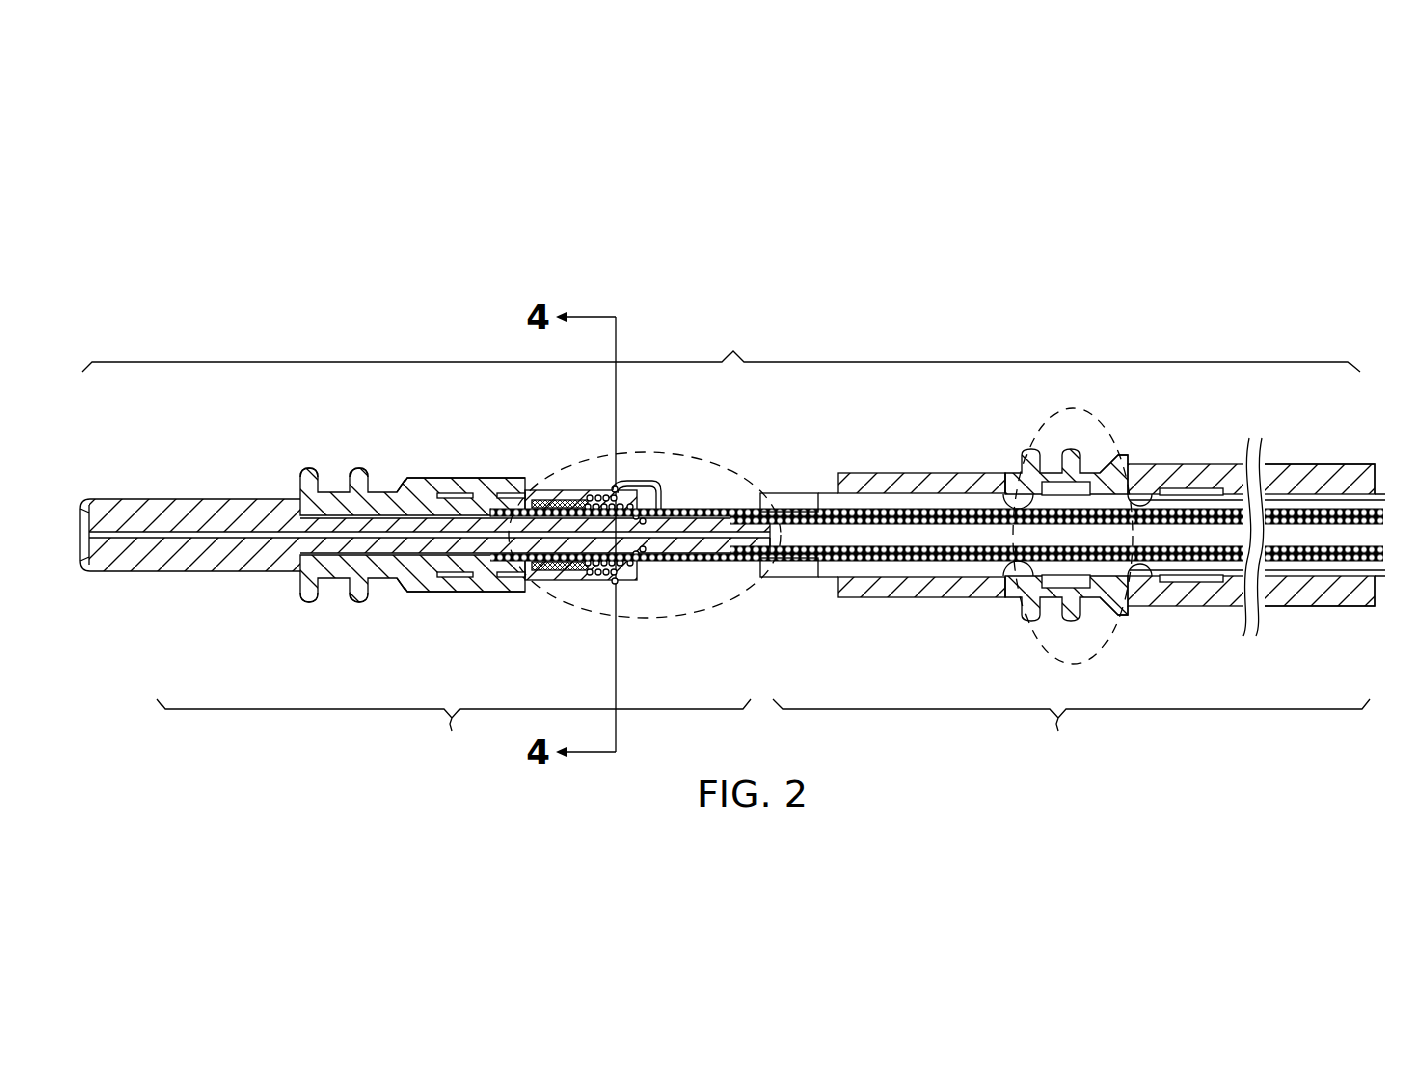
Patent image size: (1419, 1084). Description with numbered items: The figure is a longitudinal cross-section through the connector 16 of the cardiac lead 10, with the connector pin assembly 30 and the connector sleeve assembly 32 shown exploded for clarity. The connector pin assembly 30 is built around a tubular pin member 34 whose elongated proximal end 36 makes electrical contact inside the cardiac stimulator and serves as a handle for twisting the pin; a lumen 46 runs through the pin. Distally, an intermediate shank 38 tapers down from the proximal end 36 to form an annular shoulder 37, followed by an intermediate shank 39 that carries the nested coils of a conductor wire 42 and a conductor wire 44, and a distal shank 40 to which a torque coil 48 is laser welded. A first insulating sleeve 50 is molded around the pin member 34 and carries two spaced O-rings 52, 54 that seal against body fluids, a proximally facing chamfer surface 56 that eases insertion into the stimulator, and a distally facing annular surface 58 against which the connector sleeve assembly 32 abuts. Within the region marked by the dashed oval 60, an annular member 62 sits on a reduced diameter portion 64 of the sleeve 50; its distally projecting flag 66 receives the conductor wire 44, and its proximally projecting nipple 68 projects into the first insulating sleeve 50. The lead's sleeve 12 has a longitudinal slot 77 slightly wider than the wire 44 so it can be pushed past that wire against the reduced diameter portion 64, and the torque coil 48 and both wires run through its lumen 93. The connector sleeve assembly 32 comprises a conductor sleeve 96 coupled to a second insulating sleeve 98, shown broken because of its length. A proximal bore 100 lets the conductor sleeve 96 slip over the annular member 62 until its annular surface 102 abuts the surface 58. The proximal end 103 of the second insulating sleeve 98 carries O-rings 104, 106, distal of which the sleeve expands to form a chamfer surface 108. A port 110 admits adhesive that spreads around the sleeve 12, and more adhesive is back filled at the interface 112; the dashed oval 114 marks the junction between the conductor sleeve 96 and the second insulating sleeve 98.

The lead 10 is at (850, 312).
The sleeve 12 is at (800, 577).
The connector 16 is at (733, 351).
The connector pin assembly 30 is at (454, 729).
The connector sleeve assembly 32 is at (1071, 729).
The tubular pin member 34 is at (188, 499).
The elongated proximal end 36 is at (104, 496).
The annular shoulder 37 is at (300, 502).
The intermediate shank 38 is at (745, 492).
The intermediate shank 39 is at (655, 546).
The distal shank 40 is at (730, 546).
The conductor wire 42 is at (690, 508).
The conductor wire 44 is at (657, 486).
The lumen 46 is at (222, 534).
The torque coil 48 is at (805, 540).
The first insulating sleeve 50 is at (457, 477).
The O-ring 52 is at (313, 466).
The O-ring 54 is at (365, 467).
The chamfer surface 56 is at (405, 580).
The distally facing annular surface 58 is at (528, 586).
The dashed oval 60 is at (644, 452).
The annular member 62 is at (548, 489).
The reduced diameter portion 64 is at (512, 562).
The flag 66 is at (593, 498).
The nipple 68 is at (617, 562).
The slot 77 is at (798, 500).
The lumen 93 is at (937, 545).
The conductor sleeve 96 is at (913, 473).
The second insulating sleeve 98 is at (1196, 464).
The bore 100 is at (870, 492).
The annular surface 102 is at (838, 597).
The proximal end 103 is at (1090, 470).
The O-ring 104 is at (1022, 603).
The O-ring 106 is at (1058, 603).
The chamfer surface 108 is at (1120, 607).
The port 110 is at (1290, 464).
The interface 112 is at (1378, 578).
The dashed oval 114 is at (1076, 409).